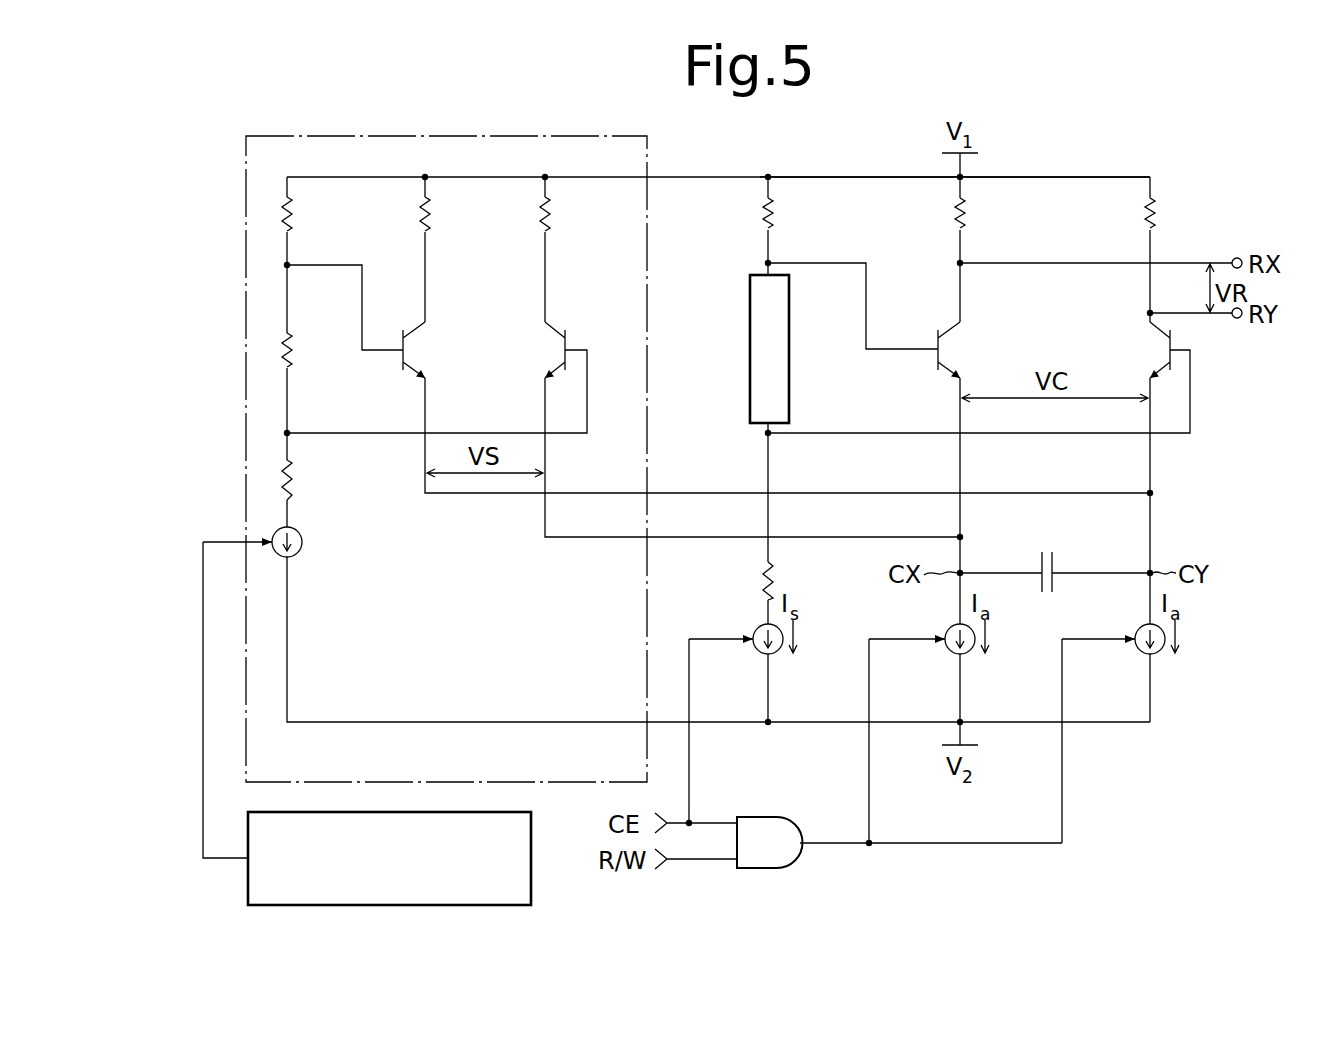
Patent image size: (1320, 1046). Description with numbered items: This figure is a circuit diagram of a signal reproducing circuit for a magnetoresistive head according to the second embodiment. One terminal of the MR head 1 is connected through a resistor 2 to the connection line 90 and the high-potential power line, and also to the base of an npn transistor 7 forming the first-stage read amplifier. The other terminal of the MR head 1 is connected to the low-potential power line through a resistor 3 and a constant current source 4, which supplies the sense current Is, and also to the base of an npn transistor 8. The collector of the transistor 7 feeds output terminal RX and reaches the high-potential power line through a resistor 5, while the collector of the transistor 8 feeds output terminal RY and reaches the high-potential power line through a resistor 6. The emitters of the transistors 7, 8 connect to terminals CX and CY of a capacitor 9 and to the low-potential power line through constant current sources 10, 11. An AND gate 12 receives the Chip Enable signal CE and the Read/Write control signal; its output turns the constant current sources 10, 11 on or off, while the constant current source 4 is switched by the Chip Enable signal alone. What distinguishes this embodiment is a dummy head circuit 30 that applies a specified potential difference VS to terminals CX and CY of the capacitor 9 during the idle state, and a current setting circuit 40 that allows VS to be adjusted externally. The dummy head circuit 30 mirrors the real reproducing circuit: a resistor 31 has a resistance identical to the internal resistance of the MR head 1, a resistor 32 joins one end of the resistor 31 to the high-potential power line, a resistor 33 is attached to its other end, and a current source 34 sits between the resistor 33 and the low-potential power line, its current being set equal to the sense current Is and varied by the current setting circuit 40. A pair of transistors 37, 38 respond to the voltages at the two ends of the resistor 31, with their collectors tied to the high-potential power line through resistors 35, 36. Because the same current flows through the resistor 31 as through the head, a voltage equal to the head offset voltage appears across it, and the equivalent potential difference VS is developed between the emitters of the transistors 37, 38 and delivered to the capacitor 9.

The MR head 1 is at (750, 342).
The resistor 2 is at (765, 217).
The resistor 3 is at (776, 578).
The constant current source 4 is at (755, 630).
The resistor 5 is at (960, 217).
The resistor 6 is at (1148, 217).
The npn transistor 7 is at (963, 352).
The npn transistor 8 is at (1160, 350).
The capacitor 9 is at (1058, 558).
The constant current source 10 is at (946, 630).
The constant current source 11 is at (1139, 630).
The AND gate 12 is at (753, 817).
The dummy head circuit 30 is at (649, 782).
The resistor 31 is at (292, 350).
The resistor 32 is at (292, 216).
The resistor 33 is at (292, 479).
The current source 34 is at (303, 543).
The resistor 35 is at (420, 215).
The resistor 36 is at (545, 215).
The transistor 37 is at (418, 352).
The transistor 38 is at (560, 350).
The current setting circuit 40 is at (533, 892).
The connection line 90 is at (758, 185).